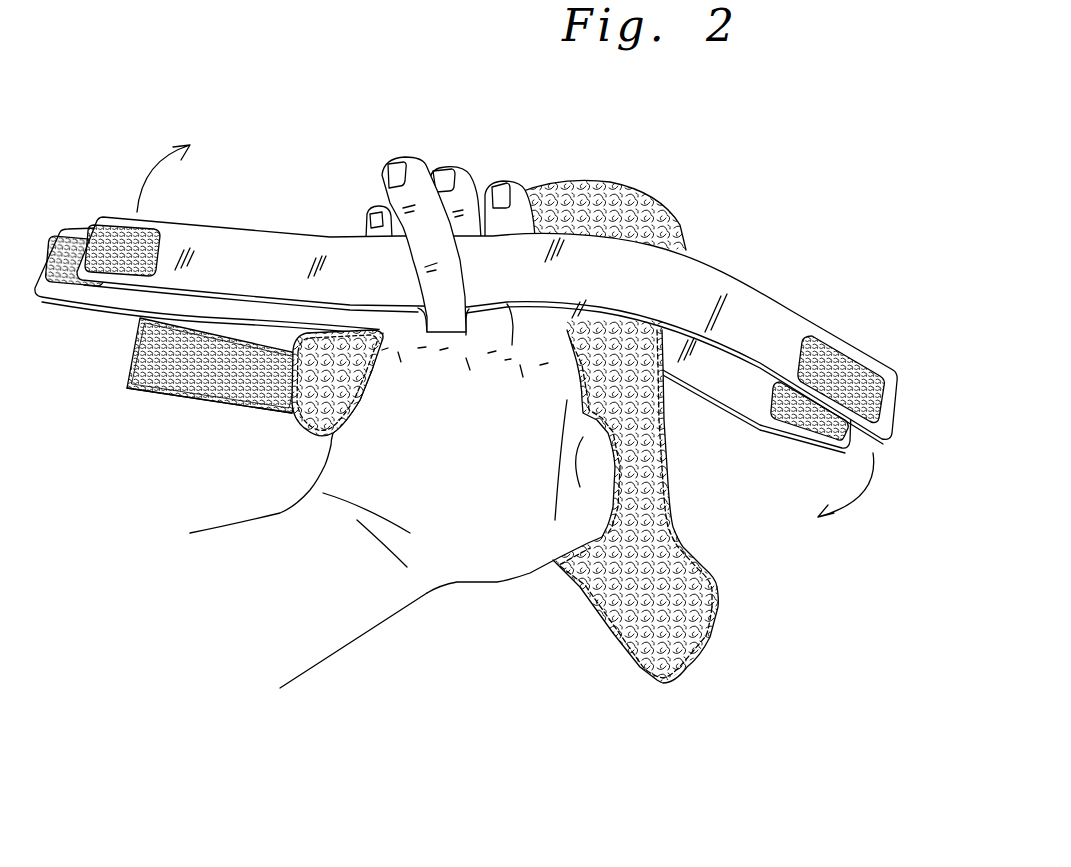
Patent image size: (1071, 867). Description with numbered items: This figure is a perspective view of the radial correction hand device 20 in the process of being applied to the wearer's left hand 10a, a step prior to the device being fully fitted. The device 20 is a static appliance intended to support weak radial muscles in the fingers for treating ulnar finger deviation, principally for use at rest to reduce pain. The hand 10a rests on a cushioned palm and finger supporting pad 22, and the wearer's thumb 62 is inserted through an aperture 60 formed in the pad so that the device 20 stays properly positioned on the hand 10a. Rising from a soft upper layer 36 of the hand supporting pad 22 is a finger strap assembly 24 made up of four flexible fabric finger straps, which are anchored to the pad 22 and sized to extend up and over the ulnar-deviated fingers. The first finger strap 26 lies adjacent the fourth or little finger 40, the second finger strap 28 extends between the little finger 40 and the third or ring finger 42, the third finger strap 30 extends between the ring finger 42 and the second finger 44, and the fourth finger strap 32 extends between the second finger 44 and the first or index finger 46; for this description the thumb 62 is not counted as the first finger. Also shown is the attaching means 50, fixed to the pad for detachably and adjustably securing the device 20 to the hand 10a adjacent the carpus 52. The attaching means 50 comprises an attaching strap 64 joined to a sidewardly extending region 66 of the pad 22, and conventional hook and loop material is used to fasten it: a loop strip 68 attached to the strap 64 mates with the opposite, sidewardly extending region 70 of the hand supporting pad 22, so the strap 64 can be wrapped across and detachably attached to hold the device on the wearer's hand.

The hand 10a is at (493, 587).
The radial correction hand device 20 is at (731, 624).
The hand supporting pad 22 is at (683, 528).
The finger strap assembly 24 is at (792, 312).
The first finger strap 26 is at (68, 304).
The second finger strap 28 is at (219, 227).
The third finger strap 30 is at (703, 255).
The fourth finger strap 32 is at (750, 422).
The soft upper layer 36 is at (677, 627).
The fourth (little) finger 40 is at (365, 210).
The third (ring) finger 42 is at (390, 160).
The second finger 44 is at (431, 165).
The first (index) finger 46 is at (500, 173).
The attaching means 50 is at (166, 399).
The carpus 52 is at (423, 566).
The aperture 60 is at (615, 487).
The thumb 62 is at (605, 537).
The attaching strap 64 is at (150, 393).
The sidewardly extending region 66 is at (307, 433).
The loop strip 68 is at (200, 375).
The opposite sidewardly extending region 70 is at (663, 683).